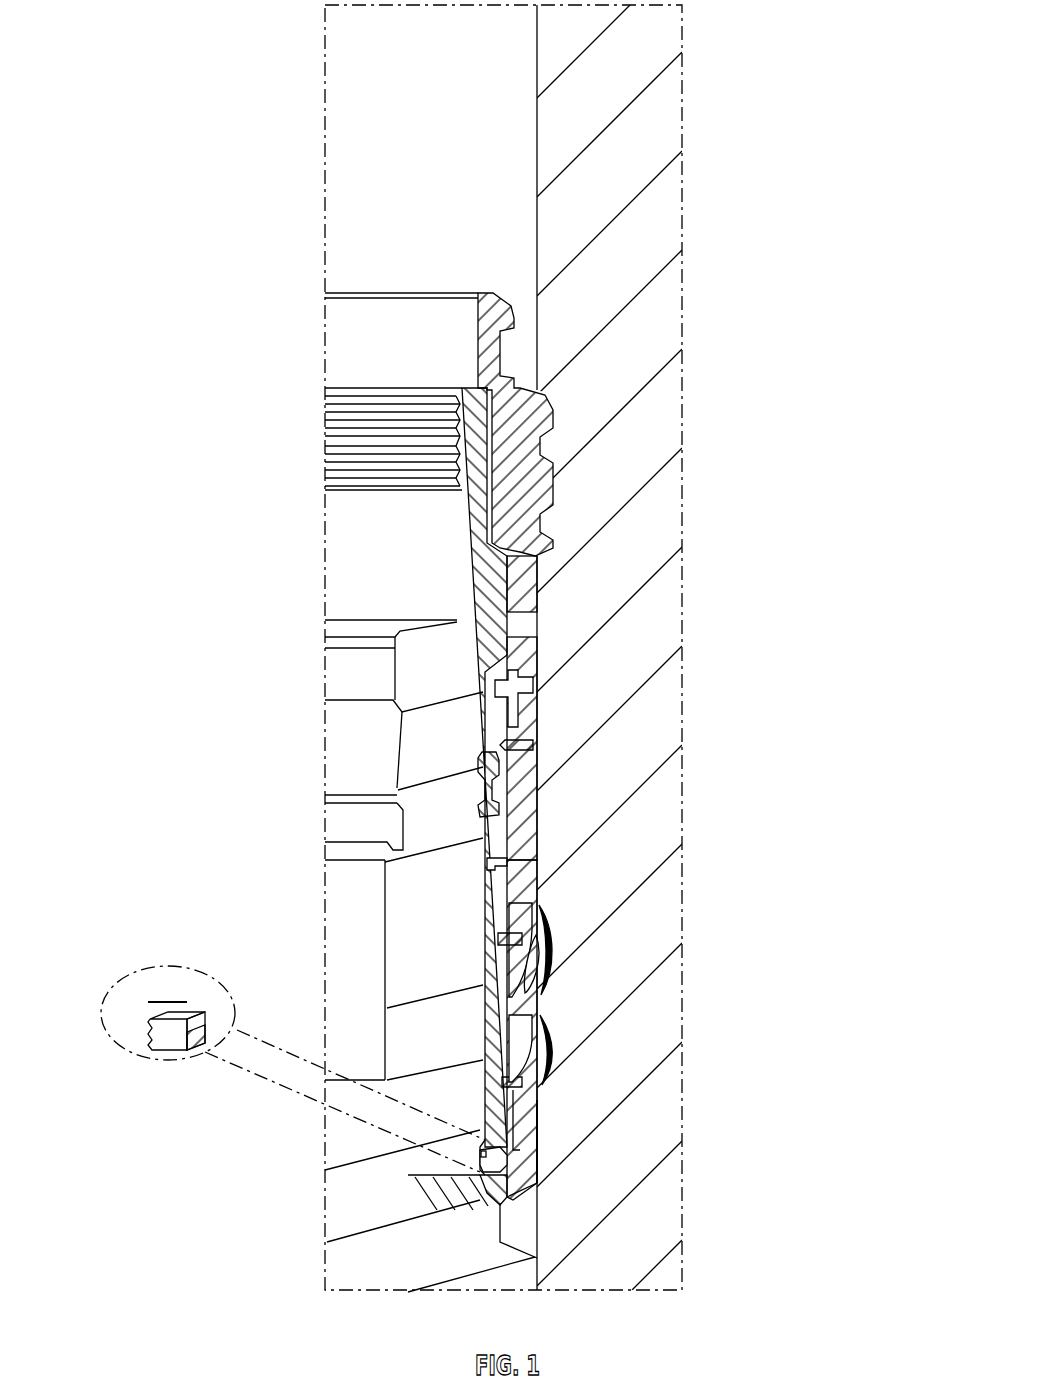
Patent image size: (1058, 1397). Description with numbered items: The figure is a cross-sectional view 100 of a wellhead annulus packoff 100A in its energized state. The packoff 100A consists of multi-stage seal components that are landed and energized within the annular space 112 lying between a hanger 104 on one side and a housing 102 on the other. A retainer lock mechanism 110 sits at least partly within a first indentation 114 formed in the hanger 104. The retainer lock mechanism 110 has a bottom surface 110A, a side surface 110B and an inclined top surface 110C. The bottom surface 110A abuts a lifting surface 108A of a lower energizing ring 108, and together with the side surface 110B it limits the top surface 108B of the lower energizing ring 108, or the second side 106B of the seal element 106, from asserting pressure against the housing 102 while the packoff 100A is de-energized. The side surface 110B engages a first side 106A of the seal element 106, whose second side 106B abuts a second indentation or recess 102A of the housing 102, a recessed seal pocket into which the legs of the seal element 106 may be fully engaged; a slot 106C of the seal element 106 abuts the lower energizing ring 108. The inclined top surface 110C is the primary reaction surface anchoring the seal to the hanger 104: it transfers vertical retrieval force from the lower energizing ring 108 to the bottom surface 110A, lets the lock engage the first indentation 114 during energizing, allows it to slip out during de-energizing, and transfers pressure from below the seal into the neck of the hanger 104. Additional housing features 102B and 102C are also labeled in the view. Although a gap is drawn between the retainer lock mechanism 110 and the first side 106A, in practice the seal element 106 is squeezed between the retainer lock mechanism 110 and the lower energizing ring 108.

The cross-sectional view 100 is at (798, 33).
The wellhead annulus packoff 100A is at (514, 356).
The housing 102 is at (665, 651).
The second indentation or recess 102A is at (543, 1023).
The housing shoulder 102B is at (520, 1150).
The housing inner surface 102C is at (537, 1140).
The hanger 104 is at (345, 768).
The seal element 106 is at (490, 962).
The first side of seal element 106A is at (480, 1173).
The second side of seal element 106B is at (547, 1060).
The slot of seal element 106C is at (507, 1020).
The lower energizing ring 108 is at (500, 1157).
The lifting surface of lower energizing ring 108A is at (507, 1180).
The top surface of lower energizing ring 108B is at (530, 1090).
The retainer lock mechanism 110 is at (485, 1165).
The bottom surface of retainer lock mechanism 110A is at (203, 1042).
The side surface of retainer lock mechanism 110B is at (203, 1053).
The inclined top surface of retainer lock mechanism 110C is at (205, 1023).
The annular space 112 is at (512, 262).
The first indentation of hanger 114 is at (488, 1152).